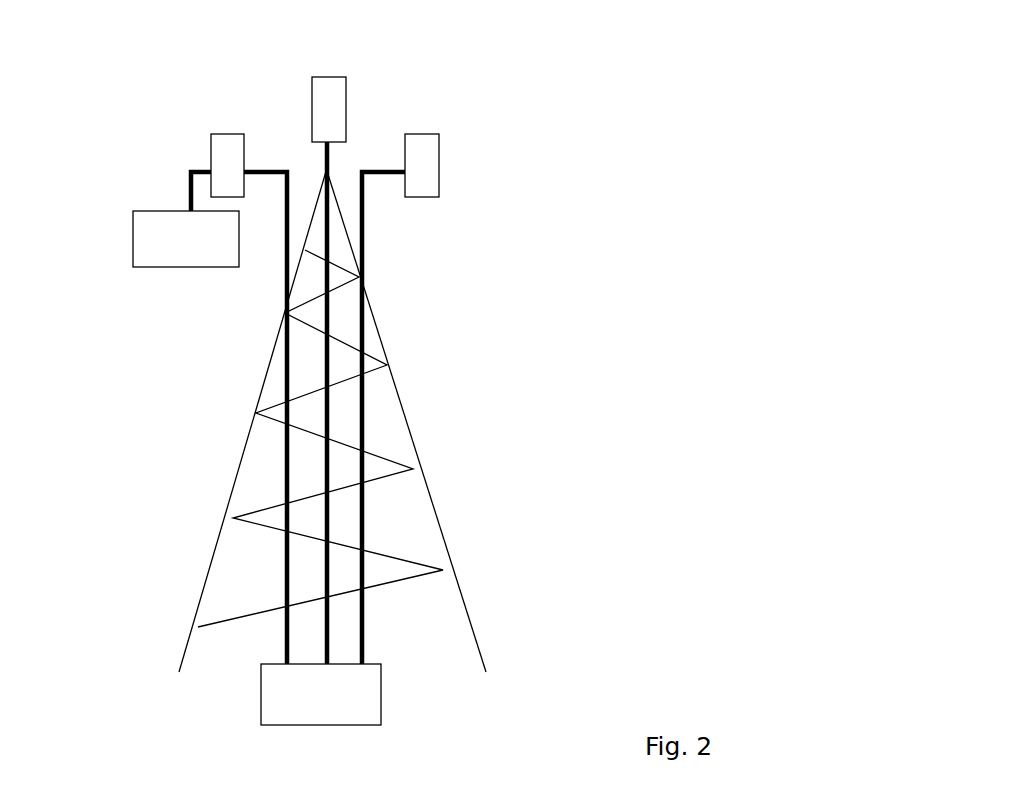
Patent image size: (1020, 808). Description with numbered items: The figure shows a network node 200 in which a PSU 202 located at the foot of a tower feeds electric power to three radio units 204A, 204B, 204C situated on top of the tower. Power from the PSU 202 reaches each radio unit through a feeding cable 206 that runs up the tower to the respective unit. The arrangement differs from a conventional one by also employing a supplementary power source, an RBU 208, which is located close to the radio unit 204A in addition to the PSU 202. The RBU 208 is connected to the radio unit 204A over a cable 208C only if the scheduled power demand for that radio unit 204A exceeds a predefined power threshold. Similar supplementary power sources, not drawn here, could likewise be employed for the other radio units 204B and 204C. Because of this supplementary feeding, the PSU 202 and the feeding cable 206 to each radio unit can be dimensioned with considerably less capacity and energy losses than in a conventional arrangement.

The network node 200 is at (516, 366).
The PSU 202 is at (261, 695).
The radio unit 204A is at (227, 134).
The radio unit 204B is at (346, 102).
The radio unit 204C is at (440, 168).
The feeding cable 206 is at (278, 370).
The RBU 208 is at (133, 245).
The cable 208C is at (190, 193).